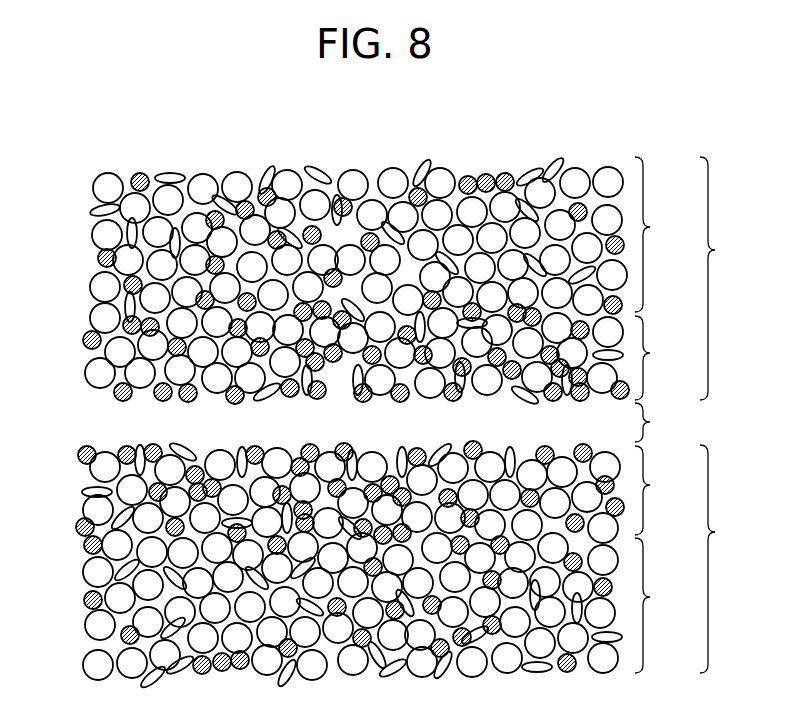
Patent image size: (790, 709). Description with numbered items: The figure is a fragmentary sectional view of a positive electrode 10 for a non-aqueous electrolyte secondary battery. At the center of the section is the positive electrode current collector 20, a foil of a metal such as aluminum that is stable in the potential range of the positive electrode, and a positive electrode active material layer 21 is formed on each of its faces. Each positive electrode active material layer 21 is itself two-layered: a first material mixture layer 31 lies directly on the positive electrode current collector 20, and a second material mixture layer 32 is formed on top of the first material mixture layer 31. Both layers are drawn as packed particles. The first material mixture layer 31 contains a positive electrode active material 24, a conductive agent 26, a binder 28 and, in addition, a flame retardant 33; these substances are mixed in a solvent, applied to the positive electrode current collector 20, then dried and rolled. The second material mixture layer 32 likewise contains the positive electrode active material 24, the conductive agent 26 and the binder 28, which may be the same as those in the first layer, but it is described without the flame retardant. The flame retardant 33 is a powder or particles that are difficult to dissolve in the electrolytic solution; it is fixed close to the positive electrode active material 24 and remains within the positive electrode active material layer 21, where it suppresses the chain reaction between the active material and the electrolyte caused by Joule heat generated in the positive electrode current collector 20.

The positive electrode 10 is at (597, 119).
The positive electrode current collector 20 is at (659, 422).
The positive electrode active material layer 21 is at (724, 415).
The positive electrode active material 24 is at (104, 174).
The conductive agent 26 is at (92, 209).
The binder 28 is at (98, 259).
The first material mixture layer 31 is at (659, 425).
The second material mixture layer 32 is at (659, 415).
The flame retardant 33 is at (83, 342).